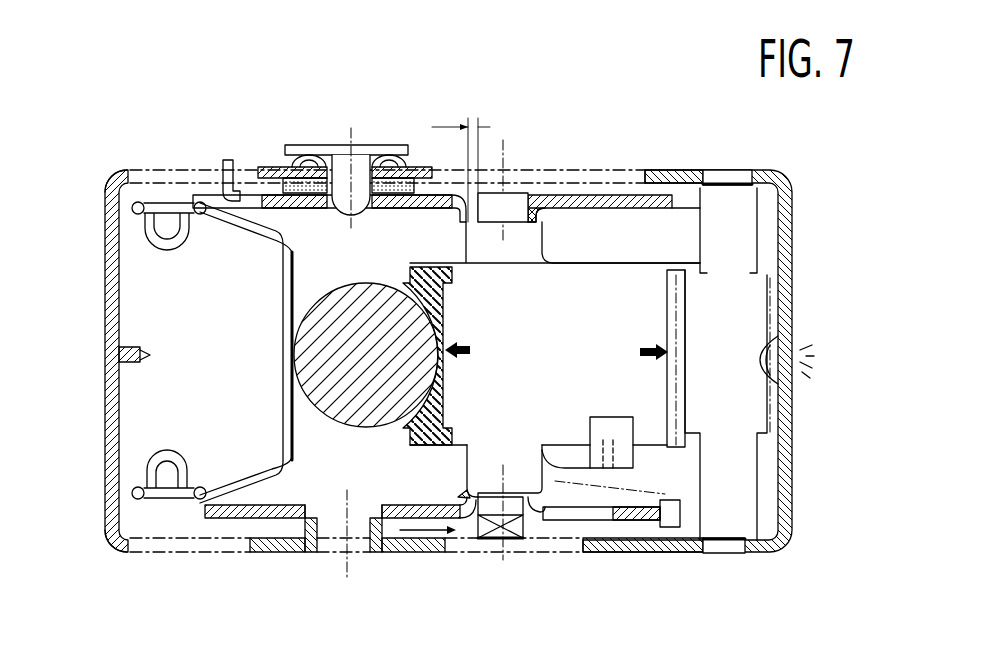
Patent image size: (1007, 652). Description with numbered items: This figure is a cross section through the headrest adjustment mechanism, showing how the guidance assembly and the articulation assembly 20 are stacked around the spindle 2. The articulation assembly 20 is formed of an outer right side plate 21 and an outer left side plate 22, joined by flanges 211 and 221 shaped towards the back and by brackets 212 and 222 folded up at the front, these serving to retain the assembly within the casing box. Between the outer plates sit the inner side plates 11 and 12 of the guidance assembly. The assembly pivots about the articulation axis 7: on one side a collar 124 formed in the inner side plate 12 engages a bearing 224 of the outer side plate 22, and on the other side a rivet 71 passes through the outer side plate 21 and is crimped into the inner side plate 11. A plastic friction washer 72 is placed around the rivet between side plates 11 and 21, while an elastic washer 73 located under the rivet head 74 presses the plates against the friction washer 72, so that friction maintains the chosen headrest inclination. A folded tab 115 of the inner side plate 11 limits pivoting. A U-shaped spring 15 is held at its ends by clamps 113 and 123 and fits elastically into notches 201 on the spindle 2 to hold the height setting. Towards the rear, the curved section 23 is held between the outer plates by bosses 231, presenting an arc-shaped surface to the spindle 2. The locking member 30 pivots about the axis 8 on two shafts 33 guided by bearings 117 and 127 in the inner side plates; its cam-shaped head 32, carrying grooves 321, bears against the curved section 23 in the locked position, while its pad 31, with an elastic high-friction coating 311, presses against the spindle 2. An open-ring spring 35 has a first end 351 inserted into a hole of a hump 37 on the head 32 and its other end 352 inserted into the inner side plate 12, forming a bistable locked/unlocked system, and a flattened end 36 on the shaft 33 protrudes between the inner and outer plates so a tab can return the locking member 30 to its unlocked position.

The spindle 2 is at (355, 417).
The articulation axis 7 is at (347, 124).
The axis 8 is at (504, 157).
The inner side plate 11 is at (580, 194).
The inner side plate 12 is at (562, 512).
The spring 15 is at (283, 311).
The articulation assembly 20 is at (793, 210).
The outer right side plate 21 is at (668, 172).
The outer left side plate 22 is at (686, 548).
The curved section 23 is at (740, 295).
The locking member 30 is at (621, 235).
The pad 31 is at (440, 262).
The head 32 is at (703, 230).
The shafts 33 is at (520, 202).
The spring 35 is at (628, 492).
The flattened end 36 is at (508, 540).
The hump 37 is at (573, 448).
The rivet 71 is at (330, 165).
The friction washer 72 is at (262, 184).
The elastic washer 73 is at (418, 178).
The head 74 is at (366, 147).
The clamp 113 is at (180, 243).
The folded tab 115 is at (220, 178).
The bearing 117 is at (540, 212).
The clamp 123 is at (166, 468).
The collar 124 is at (290, 542).
The bearing 127 is at (460, 497).
The notches 201 is at (287, 372).
The flange 211 is at (808, 348).
The bracket 212 is at (106, 165).
The flange 221 is at (812, 374).
The bracket 222 is at (104, 512).
The bearing 224 is at (388, 542).
The bosses 231 is at (740, 178).
The coating 311 is at (444, 400).
The grooves 321 is at (662, 301).
The first end 351 is at (606, 430).
The other end 352 is at (678, 514).